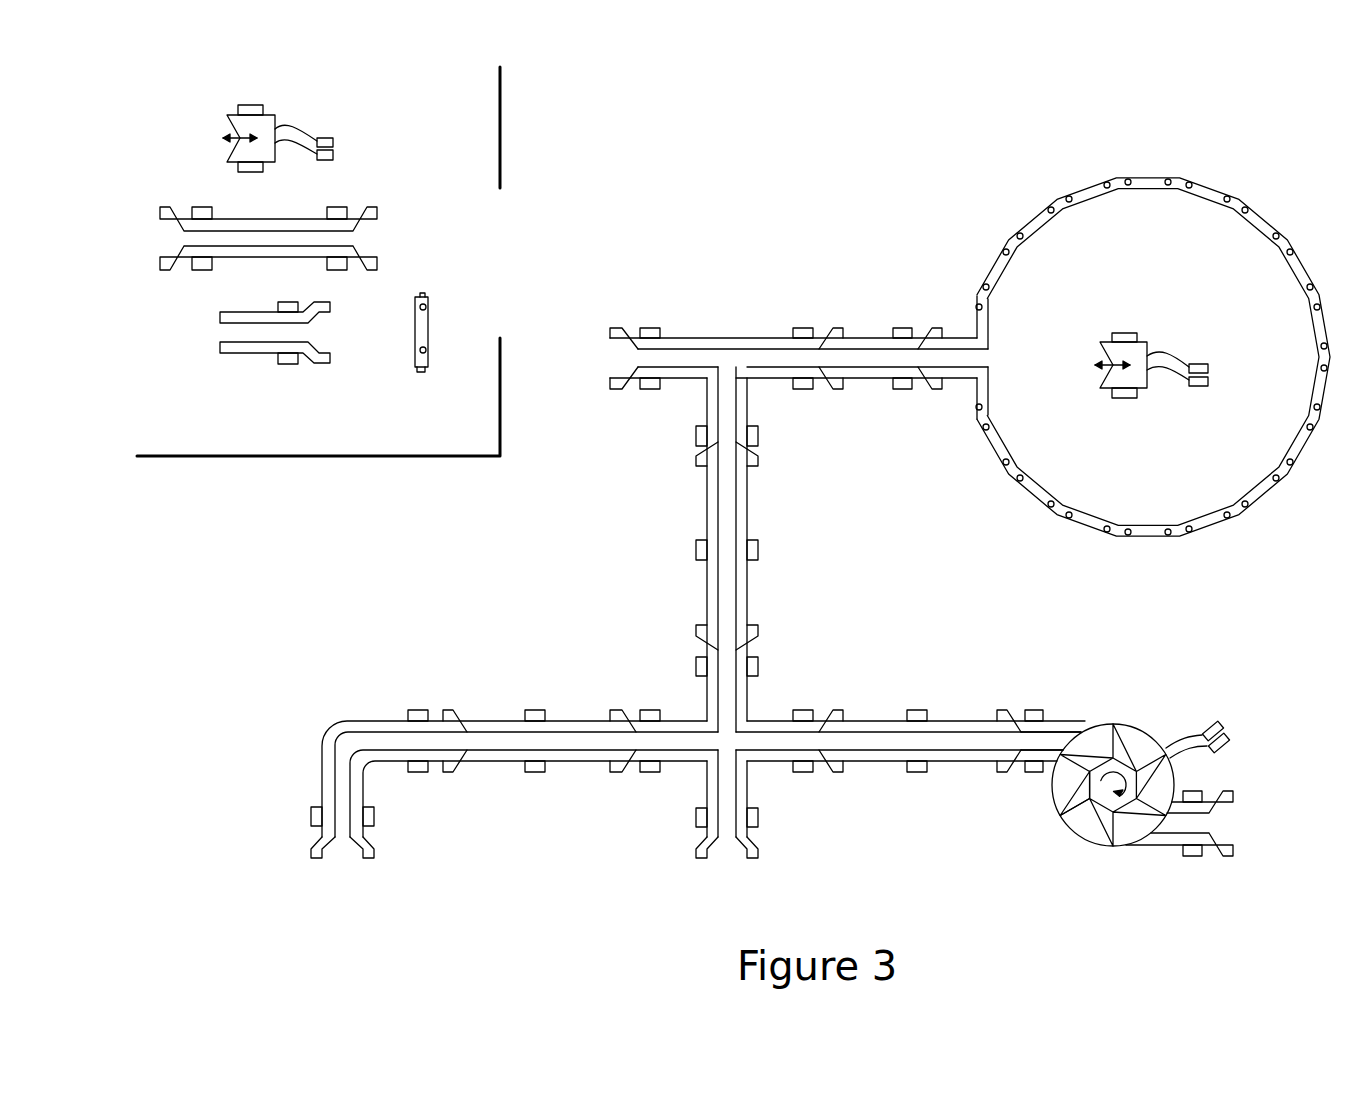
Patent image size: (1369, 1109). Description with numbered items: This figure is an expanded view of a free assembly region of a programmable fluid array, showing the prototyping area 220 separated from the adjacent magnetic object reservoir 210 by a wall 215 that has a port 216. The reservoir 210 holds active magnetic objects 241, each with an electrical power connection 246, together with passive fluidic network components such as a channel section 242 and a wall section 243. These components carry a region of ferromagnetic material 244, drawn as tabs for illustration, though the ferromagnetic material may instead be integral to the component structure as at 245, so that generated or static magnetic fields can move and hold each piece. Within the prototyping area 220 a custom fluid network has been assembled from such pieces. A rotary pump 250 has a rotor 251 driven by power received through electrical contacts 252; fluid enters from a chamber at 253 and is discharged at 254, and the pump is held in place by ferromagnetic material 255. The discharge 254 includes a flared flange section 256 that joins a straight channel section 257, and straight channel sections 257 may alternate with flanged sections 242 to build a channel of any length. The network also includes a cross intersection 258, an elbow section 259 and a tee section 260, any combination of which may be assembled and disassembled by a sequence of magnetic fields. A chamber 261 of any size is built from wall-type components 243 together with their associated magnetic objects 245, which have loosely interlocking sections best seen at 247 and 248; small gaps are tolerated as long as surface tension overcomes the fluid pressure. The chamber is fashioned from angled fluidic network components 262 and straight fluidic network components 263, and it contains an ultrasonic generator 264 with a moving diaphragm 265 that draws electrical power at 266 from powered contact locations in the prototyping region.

The magnetic object reservoir 210 is at (327, 430).
The wall 215 is at (426, 458).
The port 216 is at (498, 233).
The prototyping area 220 is at (960, 570).
The active magnetic objects 241 is at (268, 123).
The channel section 242 is at (293, 218).
The wall section 243 is at (424, 332).
The region of ferromagnetic material 244 is at (287, 371).
The integral ferromagnetic material 245 is at (428, 351).
The electrical power connection 246 is at (334, 143).
The interlocking section 247 is at (425, 293).
The interlocking section 248 is at (421, 372).
The rotary pump 250 is at (1120, 725).
The rotor 251 is at (1074, 831).
The electrical contacts 252 is at (1228, 744).
The fluid inlet 253 is at (1220, 823).
The discharge 254 is at (1040, 745).
The ferromagnetic material 255 is at (1035, 774).
The flared flange section 256 is at (998, 710).
The straight channel section 257 is at (962, 762).
The cross intersection 258 is at (748, 780).
The elbow section 259 is at (364, 780).
The tee section 260 is at (752, 337).
The chamber 261 is at (1183, 292).
The angled fluidic network components 262 is at (966, 333).
The straight fluidic network components 263 is at (990, 275).
The ultrasonic generator 264 is at (1137, 380).
The moving diaphragm 265 is at (1103, 346).
The electrical power draw 266 is at (1206, 364).